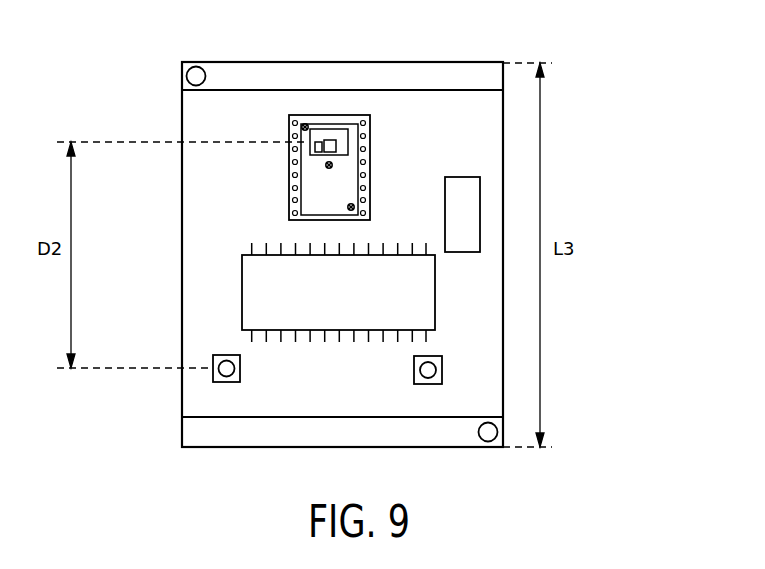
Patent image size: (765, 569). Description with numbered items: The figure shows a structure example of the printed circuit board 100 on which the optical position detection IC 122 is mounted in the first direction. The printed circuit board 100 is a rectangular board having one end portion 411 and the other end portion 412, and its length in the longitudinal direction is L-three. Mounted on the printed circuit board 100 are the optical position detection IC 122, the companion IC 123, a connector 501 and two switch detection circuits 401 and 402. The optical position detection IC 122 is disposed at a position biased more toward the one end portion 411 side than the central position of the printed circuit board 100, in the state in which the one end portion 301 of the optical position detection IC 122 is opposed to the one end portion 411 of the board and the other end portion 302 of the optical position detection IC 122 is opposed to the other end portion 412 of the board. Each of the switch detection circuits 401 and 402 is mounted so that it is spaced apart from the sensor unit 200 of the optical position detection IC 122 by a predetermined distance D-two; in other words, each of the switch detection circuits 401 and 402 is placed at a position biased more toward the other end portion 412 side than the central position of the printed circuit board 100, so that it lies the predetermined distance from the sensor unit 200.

The printed circuit board 100 is at (503, 63).
The one end portion 411 is at (239, 62).
The other end portion 412 is at (258, 447).
The one end portion 301 is at (364, 115).
The other end portion 302 is at (354, 220).
The optical position detection IC 122 is at (370, 141).
The sensor unit 200 is at (331, 137).
The connector 501 is at (465, 177).
The companion IC 123 is at (435, 300).
The switch detection circuit 401 is at (240, 370).
The switch detection circuit 402 is at (414, 371).